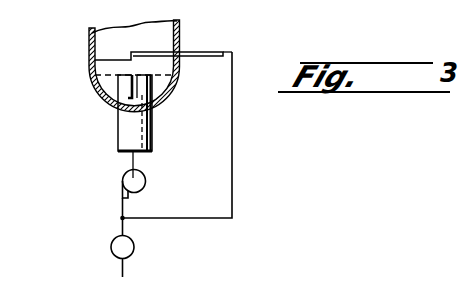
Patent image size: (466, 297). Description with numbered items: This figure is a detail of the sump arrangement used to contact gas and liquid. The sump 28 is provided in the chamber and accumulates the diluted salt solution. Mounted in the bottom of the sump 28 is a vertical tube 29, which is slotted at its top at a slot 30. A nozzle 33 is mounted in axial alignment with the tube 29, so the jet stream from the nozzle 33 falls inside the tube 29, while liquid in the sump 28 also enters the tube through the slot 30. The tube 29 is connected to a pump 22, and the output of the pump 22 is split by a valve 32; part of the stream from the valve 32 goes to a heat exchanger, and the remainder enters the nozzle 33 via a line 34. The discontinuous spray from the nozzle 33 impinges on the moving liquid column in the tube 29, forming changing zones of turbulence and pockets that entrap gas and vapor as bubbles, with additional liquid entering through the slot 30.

The pump 22 is at (146, 182).
The sump 28 is at (180, 72).
The vertical tube 29 is at (150, 142).
The slot 30 is at (129, 97).
The valve 32 is at (134, 247).
The nozzle 33 is at (95, 58).
The line 34 is at (232, 106).